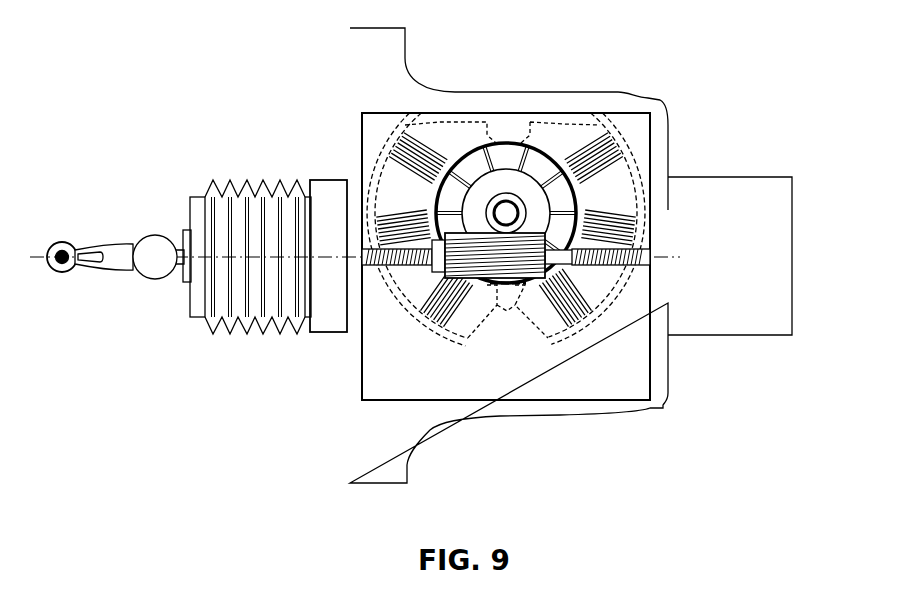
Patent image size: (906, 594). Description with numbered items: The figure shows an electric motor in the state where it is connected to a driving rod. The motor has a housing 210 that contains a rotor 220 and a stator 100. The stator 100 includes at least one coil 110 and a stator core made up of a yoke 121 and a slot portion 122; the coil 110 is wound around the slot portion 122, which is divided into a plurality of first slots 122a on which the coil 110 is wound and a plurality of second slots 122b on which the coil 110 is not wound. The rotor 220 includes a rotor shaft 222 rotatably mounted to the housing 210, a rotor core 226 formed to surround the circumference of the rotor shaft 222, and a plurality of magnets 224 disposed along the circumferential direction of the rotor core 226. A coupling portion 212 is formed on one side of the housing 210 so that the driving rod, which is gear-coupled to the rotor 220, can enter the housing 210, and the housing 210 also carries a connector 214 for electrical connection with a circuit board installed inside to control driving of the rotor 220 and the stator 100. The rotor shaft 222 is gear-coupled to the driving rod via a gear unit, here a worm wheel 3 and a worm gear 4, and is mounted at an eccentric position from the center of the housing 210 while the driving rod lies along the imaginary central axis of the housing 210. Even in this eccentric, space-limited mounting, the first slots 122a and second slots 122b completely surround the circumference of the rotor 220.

The worm wheel 3 is at (540, 163).
The worm gear 4 is at (474, 272).
The stator 100 is at (653, 410).
The coil 110 is at (614, 217).
The yoke 121 is at (568, 330).
The slot portion 122 is at (258, 94).
The first slots 122a is at (397, 153).
The second slots 122b is at (467, 137).
The housing 210 is at (455, 416).
The coupling portion 212 is at (333, 333).
The connector 214 is at (750, 336).
The rotor 220 is at (503, 139).
The rotor shaft 222 is at (508, 213).
The magnets 224 is at (537, 207).
The rotor core 226 is at (620, 160).